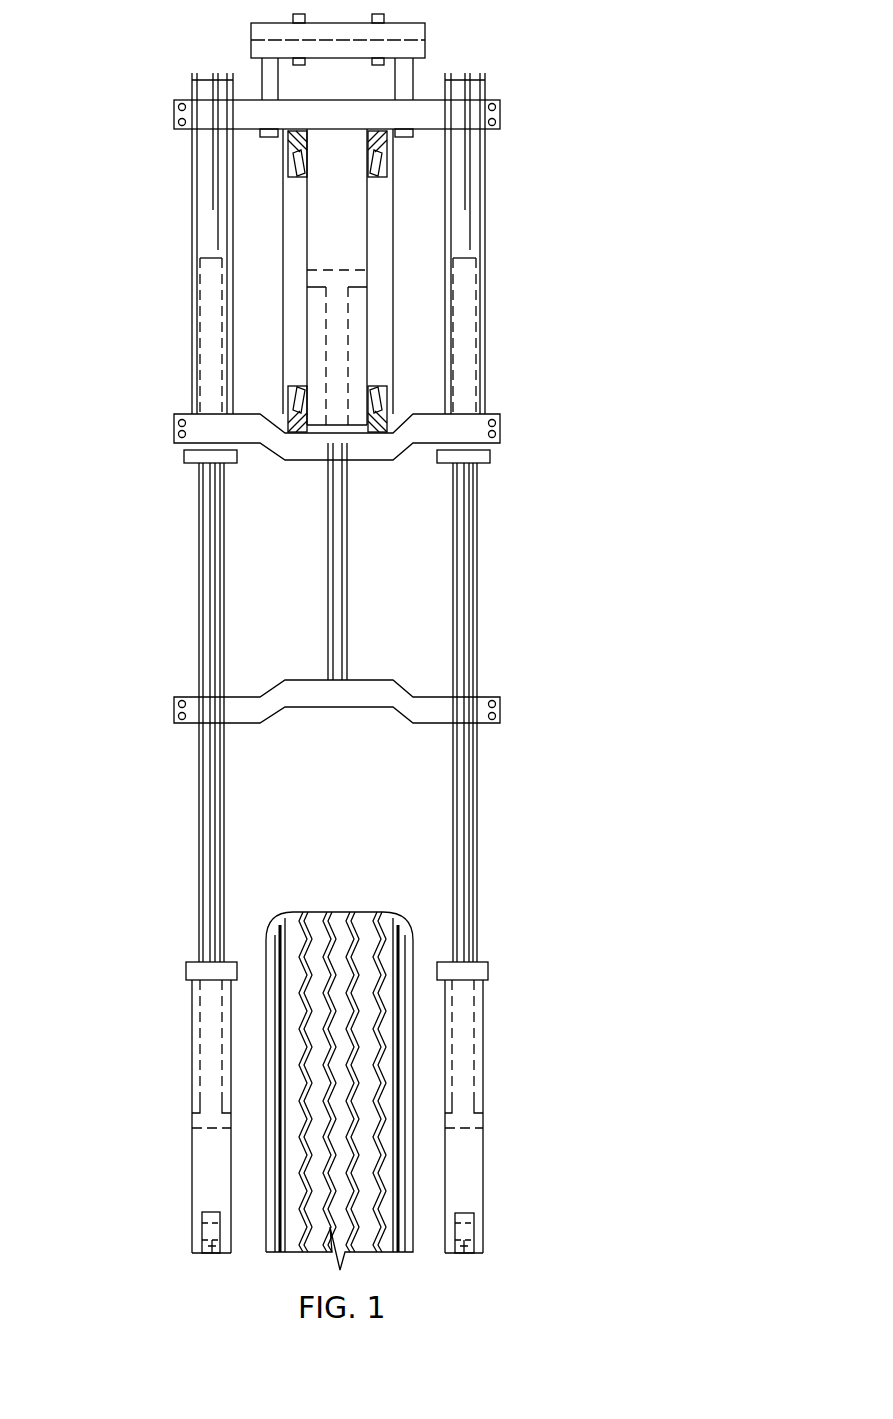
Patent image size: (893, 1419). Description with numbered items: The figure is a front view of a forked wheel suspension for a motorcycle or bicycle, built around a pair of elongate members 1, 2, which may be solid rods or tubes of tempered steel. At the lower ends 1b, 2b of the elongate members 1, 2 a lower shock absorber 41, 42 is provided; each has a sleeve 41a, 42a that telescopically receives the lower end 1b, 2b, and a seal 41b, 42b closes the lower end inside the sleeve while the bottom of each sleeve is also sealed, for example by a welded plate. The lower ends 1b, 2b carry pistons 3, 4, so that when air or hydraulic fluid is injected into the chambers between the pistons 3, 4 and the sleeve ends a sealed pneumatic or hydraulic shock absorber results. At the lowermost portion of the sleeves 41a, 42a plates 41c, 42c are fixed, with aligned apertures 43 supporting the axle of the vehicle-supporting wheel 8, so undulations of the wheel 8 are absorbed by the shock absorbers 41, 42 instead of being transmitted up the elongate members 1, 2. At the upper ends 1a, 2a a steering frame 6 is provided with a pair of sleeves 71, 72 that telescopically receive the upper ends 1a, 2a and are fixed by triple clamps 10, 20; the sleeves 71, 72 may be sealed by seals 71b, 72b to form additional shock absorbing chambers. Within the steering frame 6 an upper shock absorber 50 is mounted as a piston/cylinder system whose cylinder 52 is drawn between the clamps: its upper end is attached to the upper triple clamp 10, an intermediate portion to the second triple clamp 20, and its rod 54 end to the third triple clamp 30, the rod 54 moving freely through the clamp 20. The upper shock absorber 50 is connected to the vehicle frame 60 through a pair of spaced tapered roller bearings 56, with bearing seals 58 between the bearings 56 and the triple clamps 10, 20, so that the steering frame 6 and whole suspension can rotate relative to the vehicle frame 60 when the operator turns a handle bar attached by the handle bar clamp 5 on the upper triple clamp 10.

The elongate member 1 is at (478, 598).
The upper end of elongate member 1a is at (478, 350).
The lower end of elongate member 1b is at (478, 925).
The elongate member 2 is at (200, 577).
The upper end of elongate member 2a is at (200, 318).
The lower end of elongate member 2b is at (199, 925).
The piston 3 is at (460, 1130).
The piston 4 is at (200, 1105).
The handle bar clamp 5 is at (273, 22).
The steering frame 6 is at (518, 262).
The vehicle-supporting wheel 8 is at (343, 912).
The upper triple clamp 10 is at (500, 104).
The second triple clamp 20 is at (500, 428).
The third triple clamp 30 is at (502, 705).
The lower shock absorber 41 is at (483, 1040).
The sleeve 41a is at (484, 1178).
The seal 41b is at (490, 968).
The plate 41c is at (474, 1220).
The lower shock absorber 42 is at (192, 1052).
The sleeve 42a is at (192, 1170).
The seal 42b is at (187, 972).
The plate 42c is at (203, 1215).
The aperture 43 is at (210, 1255).
The upper shock absorber 50 is at (372, 258).
The cylinder housing 52 is at (300, 238).
The rod 54 is at (345, 548).
The tapered roller bearing 56 is at (293, 170).
The bearing seal 58 is at (296, 142).
The vehicle frame 60 is at (283, 320).
The sleeve 71 is at (485, 187).
The seal 71b is at (490, 455).
The sleeve 72 is at (192, 205).
The seal 72b is at (185, 458).